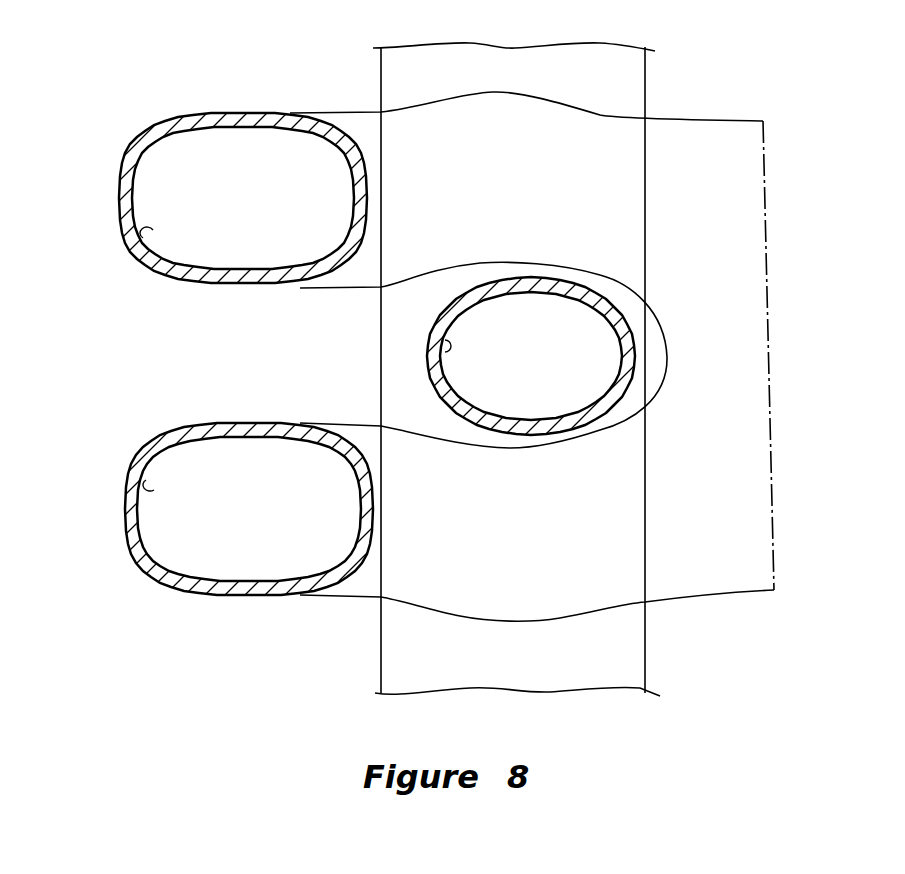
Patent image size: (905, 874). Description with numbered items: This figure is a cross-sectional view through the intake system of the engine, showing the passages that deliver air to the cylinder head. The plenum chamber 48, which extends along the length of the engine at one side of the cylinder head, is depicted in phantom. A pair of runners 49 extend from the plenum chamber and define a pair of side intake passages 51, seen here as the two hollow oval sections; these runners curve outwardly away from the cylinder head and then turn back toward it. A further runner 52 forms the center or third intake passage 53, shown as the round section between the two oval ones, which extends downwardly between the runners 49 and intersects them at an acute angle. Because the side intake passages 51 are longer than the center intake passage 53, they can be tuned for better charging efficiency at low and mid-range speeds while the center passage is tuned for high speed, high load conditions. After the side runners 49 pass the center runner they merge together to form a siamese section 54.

The plenum chamber 48 is at (647, 92).
The runners 49 is at (360, 130).
The side intake passages 51 is at (150, 247).
The runner 52 is at (477, 326).
The center intake passage 53 is at (447, 345).
The siamese section 54 is at (703, 582).